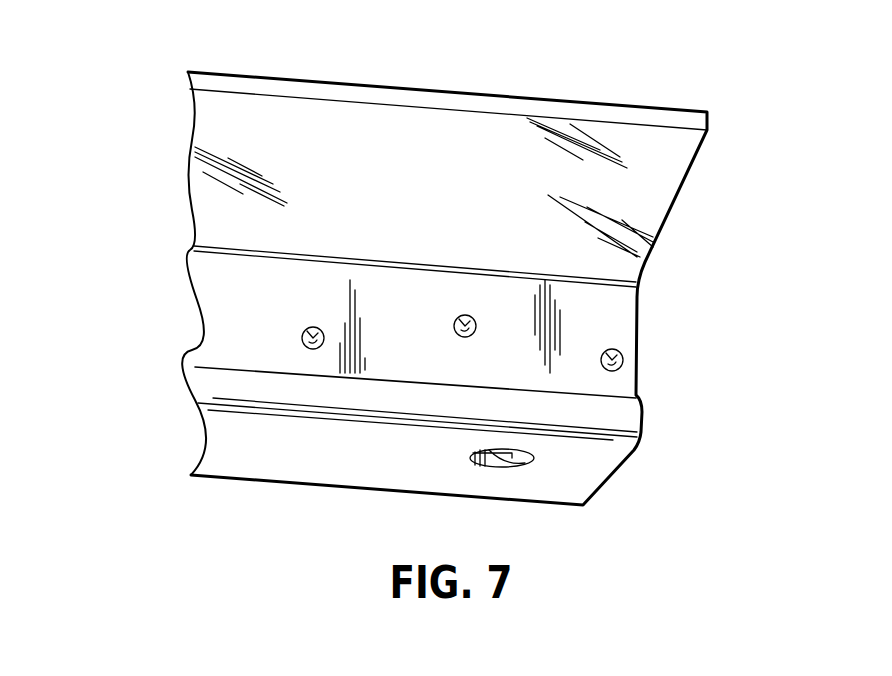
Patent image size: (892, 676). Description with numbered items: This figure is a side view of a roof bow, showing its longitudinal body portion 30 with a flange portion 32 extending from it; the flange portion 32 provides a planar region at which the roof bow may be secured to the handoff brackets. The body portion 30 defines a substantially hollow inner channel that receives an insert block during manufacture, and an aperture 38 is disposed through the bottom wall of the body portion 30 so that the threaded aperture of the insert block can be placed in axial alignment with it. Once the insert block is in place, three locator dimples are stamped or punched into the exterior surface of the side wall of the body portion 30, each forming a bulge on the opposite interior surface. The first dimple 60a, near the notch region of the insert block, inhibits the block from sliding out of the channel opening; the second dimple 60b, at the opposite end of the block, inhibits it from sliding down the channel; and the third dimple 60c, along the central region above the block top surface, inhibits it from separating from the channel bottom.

The body portion 30 is at (228, 338).
The flange portion 32 is at (398, 122).
The aperture 38 is at (510, 452).
The first dimple 60a is at (620, 355).
The second dimple 60b is at (311, 337).
The third dimple 60c is at (462, 317).